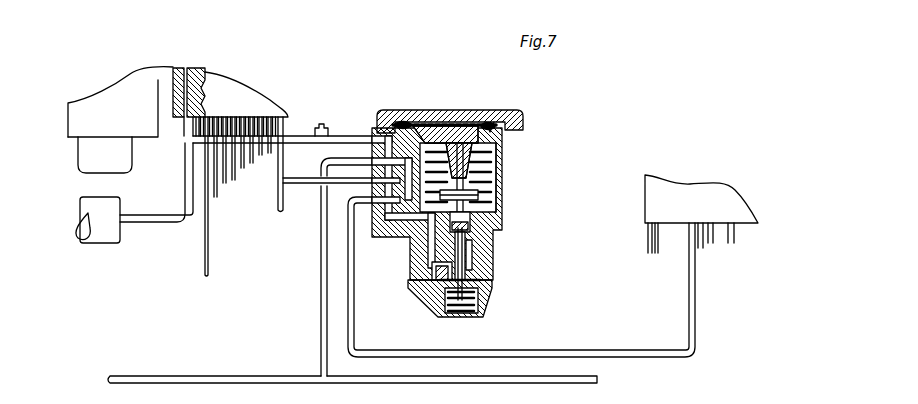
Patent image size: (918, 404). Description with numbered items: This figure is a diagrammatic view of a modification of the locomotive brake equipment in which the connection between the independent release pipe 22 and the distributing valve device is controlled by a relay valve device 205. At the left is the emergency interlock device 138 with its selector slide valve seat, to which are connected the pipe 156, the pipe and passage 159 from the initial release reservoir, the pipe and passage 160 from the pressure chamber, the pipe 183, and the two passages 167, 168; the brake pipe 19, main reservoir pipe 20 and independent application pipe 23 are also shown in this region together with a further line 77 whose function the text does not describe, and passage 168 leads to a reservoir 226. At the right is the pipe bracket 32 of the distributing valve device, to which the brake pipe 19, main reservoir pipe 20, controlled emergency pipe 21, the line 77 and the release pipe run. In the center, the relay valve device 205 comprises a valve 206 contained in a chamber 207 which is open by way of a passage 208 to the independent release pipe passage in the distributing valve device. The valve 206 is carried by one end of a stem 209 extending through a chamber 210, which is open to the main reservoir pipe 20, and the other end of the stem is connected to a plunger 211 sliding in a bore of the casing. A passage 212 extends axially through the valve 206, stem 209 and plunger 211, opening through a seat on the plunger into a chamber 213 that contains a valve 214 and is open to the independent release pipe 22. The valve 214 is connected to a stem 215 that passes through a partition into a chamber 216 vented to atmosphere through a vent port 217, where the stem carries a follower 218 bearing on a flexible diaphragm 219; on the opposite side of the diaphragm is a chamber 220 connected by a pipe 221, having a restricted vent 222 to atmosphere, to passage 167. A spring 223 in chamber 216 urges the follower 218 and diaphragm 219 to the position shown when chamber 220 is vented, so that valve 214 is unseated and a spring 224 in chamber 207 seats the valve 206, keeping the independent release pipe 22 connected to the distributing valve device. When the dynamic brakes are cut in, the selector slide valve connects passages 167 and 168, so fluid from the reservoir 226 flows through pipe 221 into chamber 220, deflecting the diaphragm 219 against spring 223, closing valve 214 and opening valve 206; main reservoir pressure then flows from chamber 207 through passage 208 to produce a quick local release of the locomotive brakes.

The emergency interlock device 138 is at (62, 108).
The passage 167 is at (183, 84).
The passage 168 is at (198, 92).
The pipe 183 is at (246, 118).
The pipe and passage 159 is at (264, 118).
The pipe 156 is at (274, 118).
The restricted vent 222 is at (314, 130).
The pipe 221 is at (355, 134).
The flexible diaphragm 219 is at (420, 120).
The relay valve device 205 is at (429, 104).
The follower 218 is at (445, 128).
The chamber 220 is at (492, 122).
The stem 215 is at (462, 155).
The chamber 216 is at (490, 165).
The vent port 217 is at (505, 176).
The chamber 213 is at (476, 212).
The valve 214 is at (470, 228).
The plunger 211 is at (473, 242).
The chamber 210 is at (475, 262).
The valve 206 is at (494, 275).
The passage 212 is at (466, 284).
The spring 223 is at (392, 238).
The stem 209 is at (452, 268).
The chamber 207 is at (440, 296).
The spring 224 is at (462, 302).
The independent application pipe 23 is at (215, 163).
The pipe and passage 160 is at (235, 168).
The brake pipe 19 is at (227, 172).
The main reservoir pipe 20 is at (282, 198).
The fuel line 77 is at (209, 236).
The reservoir 226 is at (113, 238).
The pipe bracket 32 is at (640, 193).
The controlled emergency pipe 21 is at (734, 247).
The passage 208 is at (650, 350).
The independent release pipe 22 is at (266, 377).